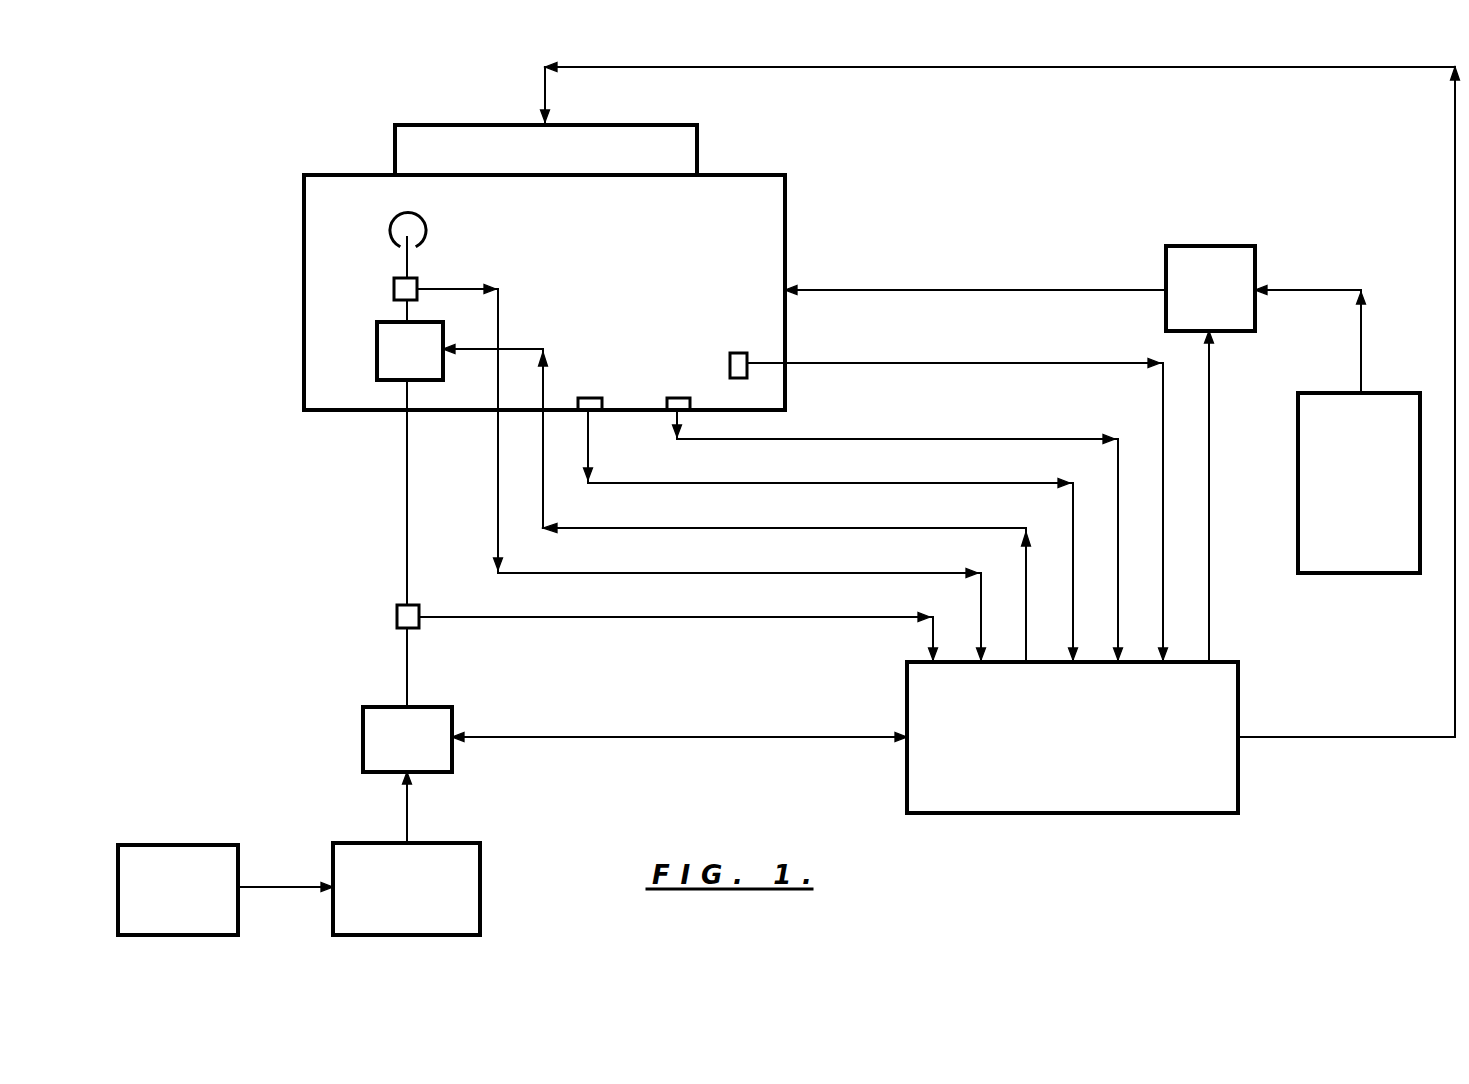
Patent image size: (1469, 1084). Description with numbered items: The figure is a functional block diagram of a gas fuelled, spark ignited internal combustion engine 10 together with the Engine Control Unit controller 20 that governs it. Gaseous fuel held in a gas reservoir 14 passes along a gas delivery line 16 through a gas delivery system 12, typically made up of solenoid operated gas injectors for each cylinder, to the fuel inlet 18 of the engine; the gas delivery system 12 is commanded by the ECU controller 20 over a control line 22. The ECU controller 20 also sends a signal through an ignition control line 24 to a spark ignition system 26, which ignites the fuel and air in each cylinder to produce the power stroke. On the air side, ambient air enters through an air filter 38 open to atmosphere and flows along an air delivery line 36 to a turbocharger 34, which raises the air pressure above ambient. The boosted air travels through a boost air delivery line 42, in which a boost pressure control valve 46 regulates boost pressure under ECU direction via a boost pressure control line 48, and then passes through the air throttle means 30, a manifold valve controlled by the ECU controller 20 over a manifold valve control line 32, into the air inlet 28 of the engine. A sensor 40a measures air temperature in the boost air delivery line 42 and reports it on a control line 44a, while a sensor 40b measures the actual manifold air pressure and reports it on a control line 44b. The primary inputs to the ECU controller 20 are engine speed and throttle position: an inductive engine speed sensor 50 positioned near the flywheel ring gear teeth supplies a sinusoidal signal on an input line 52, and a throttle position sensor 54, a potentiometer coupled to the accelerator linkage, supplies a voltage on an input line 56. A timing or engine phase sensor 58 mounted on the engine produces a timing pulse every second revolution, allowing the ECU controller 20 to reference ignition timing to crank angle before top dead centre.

The spark ignited internal combustion engine 10 is at (570, 236).
The gas delivery system 12 is at (1198, 307).
The gas reservoir 14 is at (1342, 504).
The gas delivery line 16 is at (1312, 290).
The fuel inlet 18 is at (932, 290).
The Engine Control Unit controller 20 is at (1062, 763).
The control line 22 is at (1212, 607).
The ignition control line 24 is at (1450, 212).
The spark ignition system 26 is at (476, 125).
The air inlet 28 is at (395, 221).
The air throttle means 30 is at (393, 350).
The manifold valve control line 32 is at (695, 528).
The turbocharger 34 is at (394, 910).
The air delivery line 36 is at (266, 887).
The air filter 38 is at (166, 910).
The sensor 40a is at (397, 617).
The sensor 40b is at (394, 291).
The boost air delivery line 42 is at (399, 434).
The control line 44a is at (552, 617).
The control line 44b is at (626, 573).
The boost pressure control valve 46 is at (382, 742).
The boost pressure control line 48 is at (497, 735).
The engine speed sensor 50 is at (588, 398).
The input line 52 is at (757, 483).
The throttle position sensor 54 is at (676, 398).
The input line 56 is at (840, 439).
The timing or engine phase sensor 58 is at (738, 353).